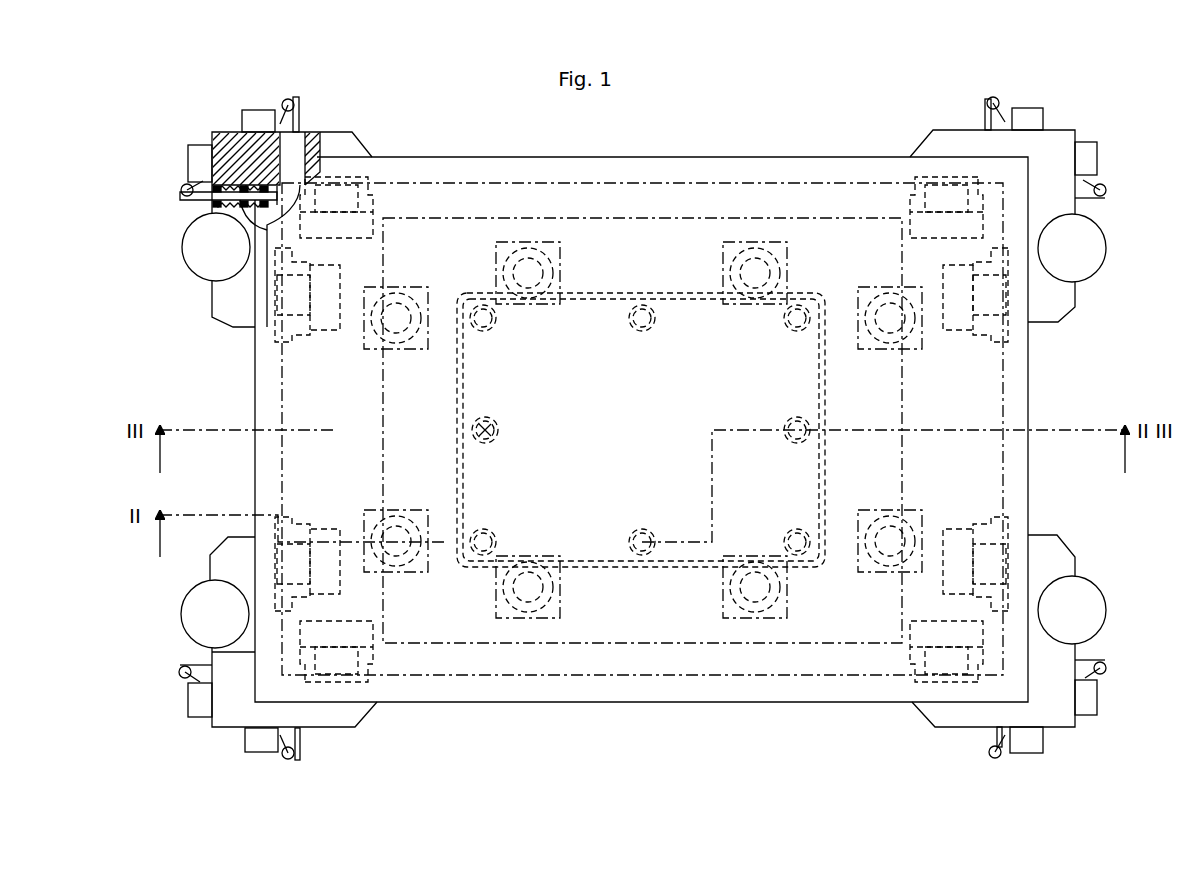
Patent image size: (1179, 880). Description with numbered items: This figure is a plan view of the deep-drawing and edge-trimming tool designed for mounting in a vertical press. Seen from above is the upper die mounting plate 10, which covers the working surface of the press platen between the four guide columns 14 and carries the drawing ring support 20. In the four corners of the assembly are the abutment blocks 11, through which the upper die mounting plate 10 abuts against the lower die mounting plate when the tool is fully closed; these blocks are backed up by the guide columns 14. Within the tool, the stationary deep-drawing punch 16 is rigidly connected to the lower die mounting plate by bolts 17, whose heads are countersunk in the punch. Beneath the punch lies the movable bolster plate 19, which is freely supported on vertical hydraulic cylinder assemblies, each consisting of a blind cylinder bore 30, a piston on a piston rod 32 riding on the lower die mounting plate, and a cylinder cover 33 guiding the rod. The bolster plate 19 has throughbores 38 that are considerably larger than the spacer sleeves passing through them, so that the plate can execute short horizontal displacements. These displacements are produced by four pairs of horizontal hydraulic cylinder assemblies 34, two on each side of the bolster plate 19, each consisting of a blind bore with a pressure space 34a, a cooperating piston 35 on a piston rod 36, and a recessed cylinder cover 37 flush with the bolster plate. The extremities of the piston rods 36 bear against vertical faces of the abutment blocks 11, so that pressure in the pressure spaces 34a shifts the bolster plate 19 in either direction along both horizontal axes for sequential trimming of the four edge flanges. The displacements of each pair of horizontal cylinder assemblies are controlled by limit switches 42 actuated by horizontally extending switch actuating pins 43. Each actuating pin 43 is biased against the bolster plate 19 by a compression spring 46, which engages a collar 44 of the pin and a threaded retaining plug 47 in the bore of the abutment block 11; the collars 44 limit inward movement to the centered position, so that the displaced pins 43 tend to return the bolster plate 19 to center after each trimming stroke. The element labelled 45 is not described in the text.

The upper die mounting plate 10 is at (770, 166).
The abutment blocks 11 is at (232, 150).
The guide columns 14 is at (203, 253).
The deep-drawing punch 16 is at (790, 389).
The bolts 17 is at (492, 438).
The bolster plate 19 is at (487, 183).
The drawing ring support 20 is at (656, 218).
The blind cylinder bore 30 is at (748, 248).
The piston rods 32 is at (760, 270).
The cylinder covers 33 is at (787, 270).
The horizontal hydraulic cylinder assemblies 34 is at (957, 342).
The pressure spaces 34a is at (935, 620).
The piston 35 is at (962, 305).
The piston rod 36 is at (1010, 295).
The recessed cylinder cover 37 is at (1000, 532).
The throughbores 38 is at (496, 421).
The limit switches 42 is at (200, 157).
The switch actuating pins 43 is at (185, 198).
The collar 44 is at (235, 220).
The lug 45 is at (257, 207).
The compression spring 46 is at (233, 188).
The threaded retaining plug 47 is at (210, 210).